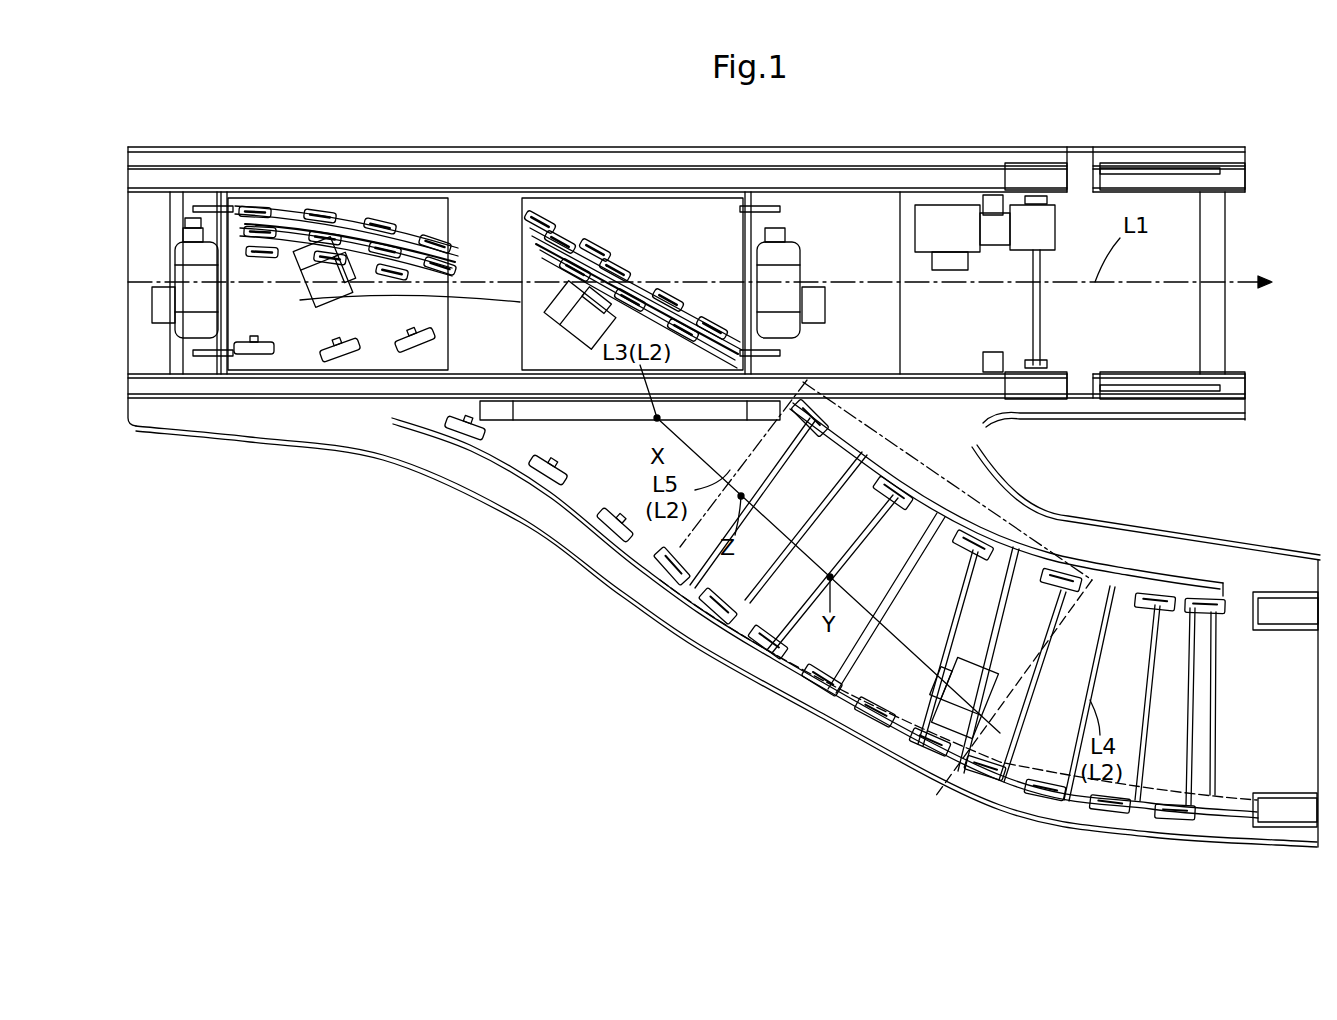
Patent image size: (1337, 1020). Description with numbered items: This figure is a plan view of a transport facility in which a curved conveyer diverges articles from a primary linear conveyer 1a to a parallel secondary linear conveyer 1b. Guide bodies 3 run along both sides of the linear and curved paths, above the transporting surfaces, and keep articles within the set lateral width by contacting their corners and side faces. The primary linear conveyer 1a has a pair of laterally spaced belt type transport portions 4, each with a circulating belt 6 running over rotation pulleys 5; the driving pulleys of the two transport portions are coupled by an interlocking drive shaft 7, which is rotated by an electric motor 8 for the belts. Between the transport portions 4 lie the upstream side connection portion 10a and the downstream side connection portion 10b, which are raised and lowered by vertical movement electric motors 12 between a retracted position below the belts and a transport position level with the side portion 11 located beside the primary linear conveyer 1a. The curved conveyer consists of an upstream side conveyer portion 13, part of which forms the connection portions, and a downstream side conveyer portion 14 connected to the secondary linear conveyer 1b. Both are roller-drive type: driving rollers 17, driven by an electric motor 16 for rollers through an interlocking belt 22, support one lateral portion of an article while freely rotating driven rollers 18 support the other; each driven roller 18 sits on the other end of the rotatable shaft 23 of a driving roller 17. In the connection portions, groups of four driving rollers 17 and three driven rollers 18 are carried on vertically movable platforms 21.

The primary linear conveyer 1a is at (742, 145).
The secondary linear conveyer 1b is at (1290, 580).
The guide body 3 is at (930, 148).
The belt type transport portion 4 is at (704, 160).
The rotation pulley 5 is at (1030, 165).
The circulating belt 6 is at (388, 165).
The interlocking drive shaft 7 is at (1030, 312).
The electric motor for belts 8 is at (962, 258).
The upstream side connection portion 10a is at (455, 190).
The downstream side connection portion 10b is at (605, 190).
The side portion 11 is at (596, 550).
The vertical movement electric motor 12 is at (175, 255).
The upstream side conveyer portion 13 is at (505, 505).
The downstream side conveyer portion 14 is at (790, 720).
The electric motor for rollers 16 is at (300, 297).
The driving roller 17 is at (300, 205).
The driven roller 18 is at (415, 338).
The vertically movable platform 21 is at (440, 322).
The interlocking belt 22 is at (295, 235).
The rotatable shaft 23 is at (795, 525).